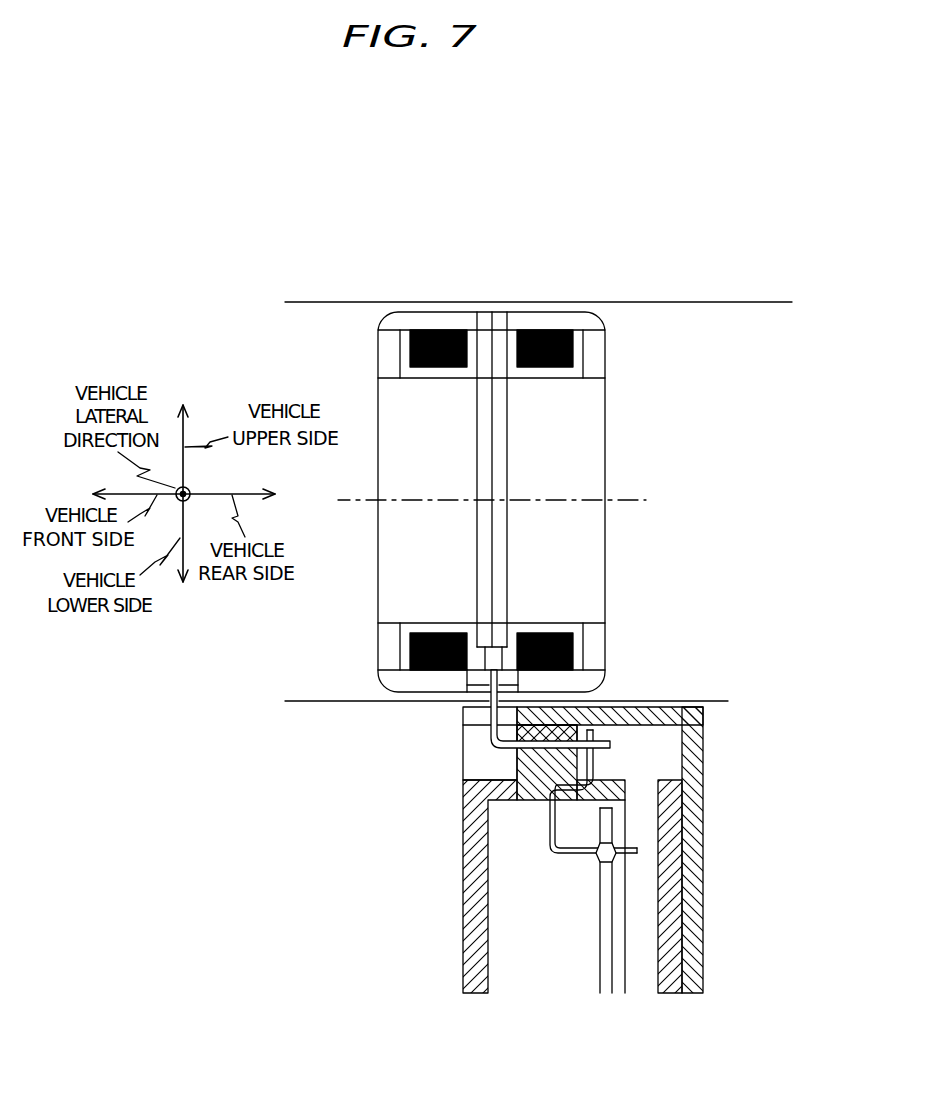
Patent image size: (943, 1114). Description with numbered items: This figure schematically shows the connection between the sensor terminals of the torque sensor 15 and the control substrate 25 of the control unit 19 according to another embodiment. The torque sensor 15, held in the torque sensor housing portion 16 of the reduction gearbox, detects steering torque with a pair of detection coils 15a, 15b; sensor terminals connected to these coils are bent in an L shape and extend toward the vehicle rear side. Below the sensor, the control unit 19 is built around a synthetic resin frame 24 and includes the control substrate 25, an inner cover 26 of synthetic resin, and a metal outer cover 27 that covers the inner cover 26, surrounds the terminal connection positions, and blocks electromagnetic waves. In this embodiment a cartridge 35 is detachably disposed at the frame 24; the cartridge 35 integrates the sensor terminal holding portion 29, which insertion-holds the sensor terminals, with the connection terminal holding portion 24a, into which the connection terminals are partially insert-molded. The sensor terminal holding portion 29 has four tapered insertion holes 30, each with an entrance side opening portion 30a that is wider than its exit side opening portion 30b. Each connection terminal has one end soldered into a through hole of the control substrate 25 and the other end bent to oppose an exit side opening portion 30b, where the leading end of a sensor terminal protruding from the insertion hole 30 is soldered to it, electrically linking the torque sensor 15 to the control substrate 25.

The torque sensor 15 is at (492, 445).
The detection coil 15a is at (448, 328).
The detection coil 15b is at (533, 328).
The torque sensor housing portion 16 is at (675, 302).
The control unit 19 is at (712, 826).
The frame 24 is at (473, 850).
The connection terminal holding portion 24a is at (617, 790).
The control substrate 25 is at (562, 923).
The inner cover 26 is at (643, 935).
The outer cover 27 is at (690, 868).
The sensor terminal holding portion 29 is at (540, 730).
The insertion hole 30 is at (522, 740).
The entrance side opening portion 30a is at (505, 760).
The exit side opening portion 30b is at (515, 795).
The cartridge 35 is at (620, 803).